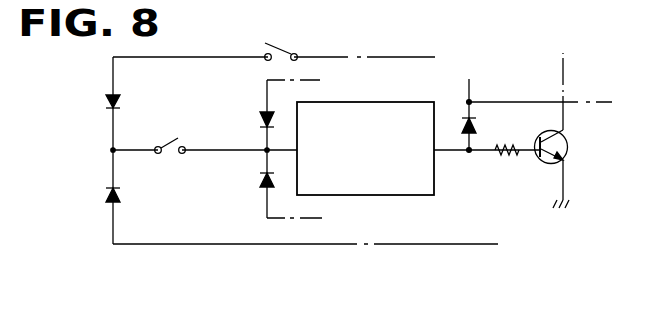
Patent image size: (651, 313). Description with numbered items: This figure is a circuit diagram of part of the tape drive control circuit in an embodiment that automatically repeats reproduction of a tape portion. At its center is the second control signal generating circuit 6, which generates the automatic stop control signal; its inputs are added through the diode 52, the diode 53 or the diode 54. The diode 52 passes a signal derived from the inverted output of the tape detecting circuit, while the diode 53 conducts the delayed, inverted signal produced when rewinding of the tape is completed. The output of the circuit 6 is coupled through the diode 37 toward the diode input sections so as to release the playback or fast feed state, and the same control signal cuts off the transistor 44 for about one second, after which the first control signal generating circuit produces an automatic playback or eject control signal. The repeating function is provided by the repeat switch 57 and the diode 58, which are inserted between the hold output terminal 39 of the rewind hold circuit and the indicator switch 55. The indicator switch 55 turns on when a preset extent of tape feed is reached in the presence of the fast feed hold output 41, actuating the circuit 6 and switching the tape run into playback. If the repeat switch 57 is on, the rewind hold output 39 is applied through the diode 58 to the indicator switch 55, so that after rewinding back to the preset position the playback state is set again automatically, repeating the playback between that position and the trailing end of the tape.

The second control signal generating circuit 6 is at (373, 102).
The diode 37 is at (478, 127).
The hold output terminal 39 is at (393, 57).
The hold output 41 is at (417, 244).
The transistor 44 is at (568, 147).
The diode 52 is at (260, 117).
The diode 53 is at (260, 180).
The diode 54 is at (120, 195).
The indicator switch 55 is at (168, 138).
The repeat switch 57 is at (274, 44).
The diode 58 is at (121, 102).